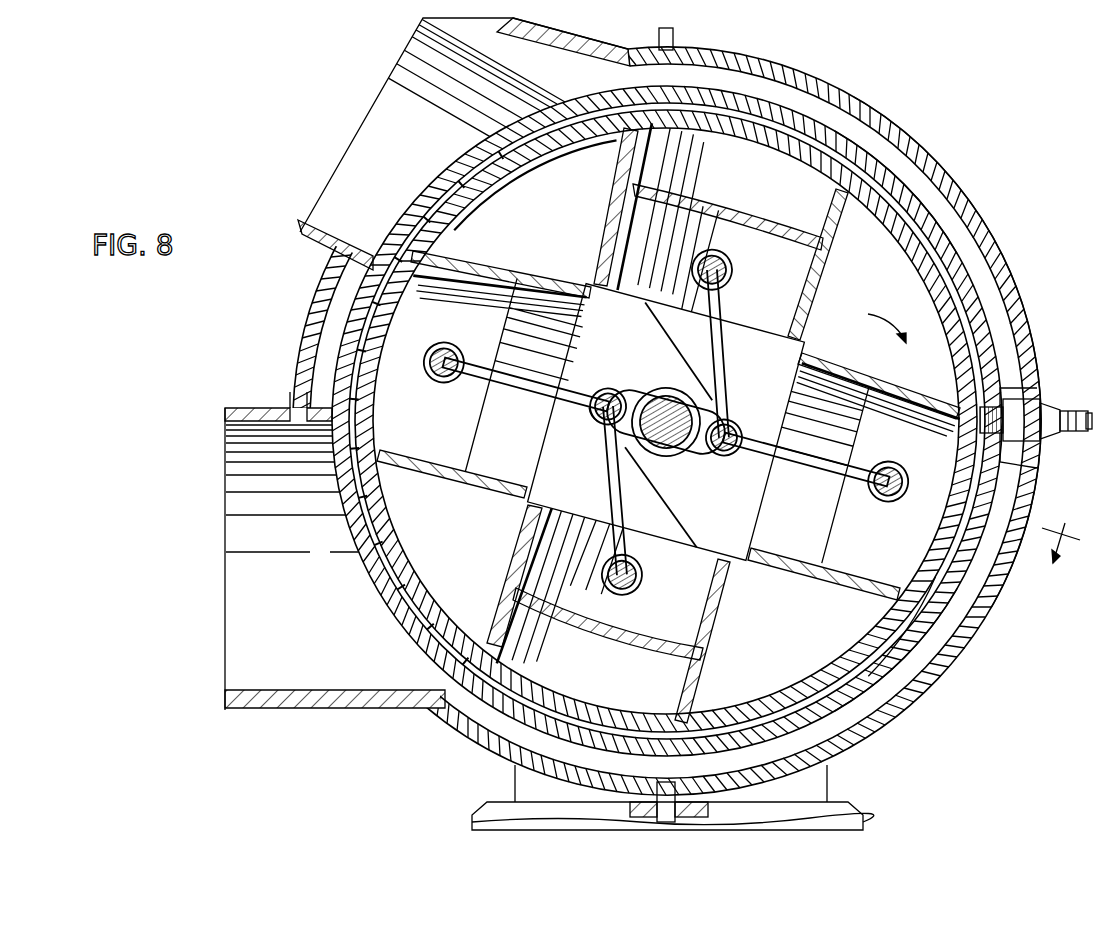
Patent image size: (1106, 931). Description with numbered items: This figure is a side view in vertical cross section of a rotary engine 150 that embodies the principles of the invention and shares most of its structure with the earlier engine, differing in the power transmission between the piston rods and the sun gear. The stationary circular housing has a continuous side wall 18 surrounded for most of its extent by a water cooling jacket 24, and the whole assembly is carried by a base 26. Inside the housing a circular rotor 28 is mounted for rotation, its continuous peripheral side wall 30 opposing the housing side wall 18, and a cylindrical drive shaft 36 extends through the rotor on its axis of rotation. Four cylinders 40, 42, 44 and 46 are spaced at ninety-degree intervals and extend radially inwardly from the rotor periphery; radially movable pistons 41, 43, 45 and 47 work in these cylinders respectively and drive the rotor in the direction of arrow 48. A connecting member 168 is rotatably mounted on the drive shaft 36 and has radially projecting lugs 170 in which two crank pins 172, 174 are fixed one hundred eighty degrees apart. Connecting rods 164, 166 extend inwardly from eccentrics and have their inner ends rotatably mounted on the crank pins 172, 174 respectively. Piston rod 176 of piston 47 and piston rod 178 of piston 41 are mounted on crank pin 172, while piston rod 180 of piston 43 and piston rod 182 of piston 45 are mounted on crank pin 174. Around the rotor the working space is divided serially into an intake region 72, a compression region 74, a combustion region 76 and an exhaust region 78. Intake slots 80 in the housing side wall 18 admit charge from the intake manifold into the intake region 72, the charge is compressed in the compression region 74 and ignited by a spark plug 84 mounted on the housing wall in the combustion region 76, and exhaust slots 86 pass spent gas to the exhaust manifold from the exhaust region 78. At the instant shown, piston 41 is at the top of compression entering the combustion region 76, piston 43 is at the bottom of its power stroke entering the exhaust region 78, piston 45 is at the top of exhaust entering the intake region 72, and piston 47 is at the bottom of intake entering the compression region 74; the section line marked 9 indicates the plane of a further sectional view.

The water cooling jacket 24 is at (806, 96).
The housing side wall 18 is at (858, 162).
The compression region 74 is at (932, 240).
The rotor side wall 30 is at (812, 690).
The rotor 28 is at (882, 650).
The combustion region 76 is at (870, 680).
The rotary engine 150 is at (945, 156).
The intake region 72 is at (468, 175).
The intake slots 80 is at (432, 197).
The exhaust region 78 is at (408, 583).
The exhaust slots 86 is at (430, 666).
The cylinder 44 is at (561, 283).
The piston 45 is at (372, 356).
The piston 47 is at (783, 217).
The cylinder 46 is at (823, 254).
The piston 41 is at (868, 574).
The cylinder 40 is at (845, 592).
The piston 43 is at (632, 654).
The cylinder 42 is at (706, 668).
The arrow 48 is at (881, 324).
The connecting rod 164 is at (661, 318).
The connecting rod 166 is at (672, 514).
The connecting member 168 is at (667, 390).
The lugs 170 is at (615, 390).
The crank pin 172 is at (731, 430).
The crank pin 174 is at (600, 421).
The piston rod 176 is at (722, 356).
The piston rod 178 is at (800, 462).
The piston rod 180 is at (610, 468).
The piston rod 182 is at (520, 392).
The drive shaft 36 is at (680, 456).
The section line 9- 9 is at (853, 516).
The base 26 is at (830, 790).
The spark plug 84 is at (1030, 404).